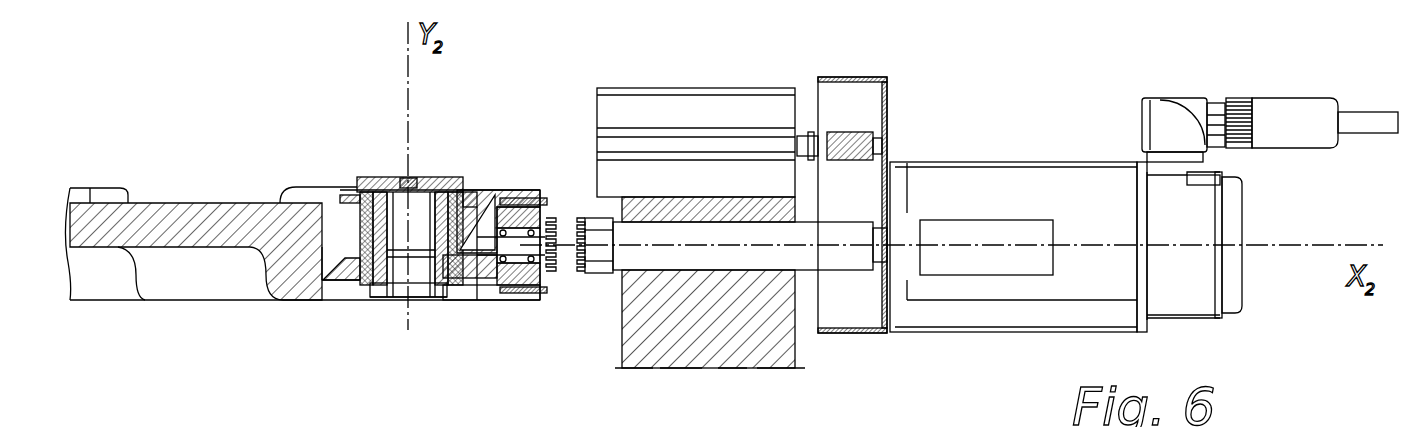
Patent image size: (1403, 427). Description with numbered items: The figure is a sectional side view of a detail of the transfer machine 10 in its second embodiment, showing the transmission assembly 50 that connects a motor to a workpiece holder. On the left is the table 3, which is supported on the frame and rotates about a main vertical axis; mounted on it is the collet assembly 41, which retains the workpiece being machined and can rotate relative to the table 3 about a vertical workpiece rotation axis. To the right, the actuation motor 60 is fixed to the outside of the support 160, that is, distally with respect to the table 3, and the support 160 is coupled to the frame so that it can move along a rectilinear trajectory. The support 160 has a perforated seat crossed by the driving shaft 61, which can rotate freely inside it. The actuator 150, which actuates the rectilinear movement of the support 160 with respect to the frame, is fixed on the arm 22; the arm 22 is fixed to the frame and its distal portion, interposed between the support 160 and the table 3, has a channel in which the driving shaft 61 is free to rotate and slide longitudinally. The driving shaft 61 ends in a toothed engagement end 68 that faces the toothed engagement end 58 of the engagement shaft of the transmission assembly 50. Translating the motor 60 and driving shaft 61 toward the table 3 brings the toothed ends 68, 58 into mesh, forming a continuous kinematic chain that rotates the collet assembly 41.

The table 3 is at (100, 302).
The collet assembly 41 is at (393, 180).
The transmission assembly 50 is at (537, 186).
The toothed engagement end of the engagement shaft 58 is at (567, 268).
The toothed engagement end of the driving shaft 68 is at (562, 232).
The actuator 150 is at (680, 115).
The arm 22 is at (712, 323).
The transfer machine 10 is at (1005, 204).
The driving shaft 61 is at (842, 258).
The support 160 is at (850, 112).
The actuation motor 60 is at (1083, 208).